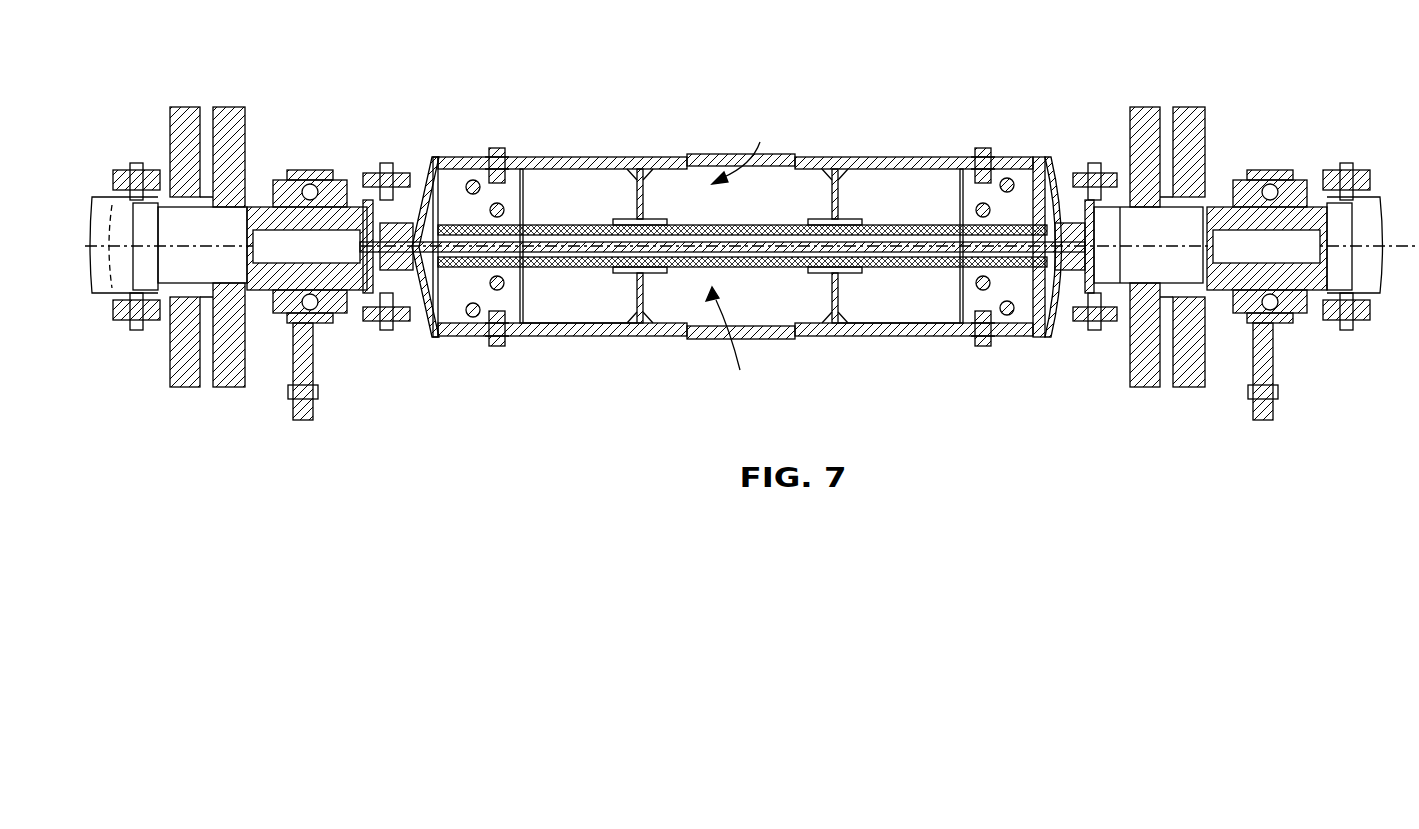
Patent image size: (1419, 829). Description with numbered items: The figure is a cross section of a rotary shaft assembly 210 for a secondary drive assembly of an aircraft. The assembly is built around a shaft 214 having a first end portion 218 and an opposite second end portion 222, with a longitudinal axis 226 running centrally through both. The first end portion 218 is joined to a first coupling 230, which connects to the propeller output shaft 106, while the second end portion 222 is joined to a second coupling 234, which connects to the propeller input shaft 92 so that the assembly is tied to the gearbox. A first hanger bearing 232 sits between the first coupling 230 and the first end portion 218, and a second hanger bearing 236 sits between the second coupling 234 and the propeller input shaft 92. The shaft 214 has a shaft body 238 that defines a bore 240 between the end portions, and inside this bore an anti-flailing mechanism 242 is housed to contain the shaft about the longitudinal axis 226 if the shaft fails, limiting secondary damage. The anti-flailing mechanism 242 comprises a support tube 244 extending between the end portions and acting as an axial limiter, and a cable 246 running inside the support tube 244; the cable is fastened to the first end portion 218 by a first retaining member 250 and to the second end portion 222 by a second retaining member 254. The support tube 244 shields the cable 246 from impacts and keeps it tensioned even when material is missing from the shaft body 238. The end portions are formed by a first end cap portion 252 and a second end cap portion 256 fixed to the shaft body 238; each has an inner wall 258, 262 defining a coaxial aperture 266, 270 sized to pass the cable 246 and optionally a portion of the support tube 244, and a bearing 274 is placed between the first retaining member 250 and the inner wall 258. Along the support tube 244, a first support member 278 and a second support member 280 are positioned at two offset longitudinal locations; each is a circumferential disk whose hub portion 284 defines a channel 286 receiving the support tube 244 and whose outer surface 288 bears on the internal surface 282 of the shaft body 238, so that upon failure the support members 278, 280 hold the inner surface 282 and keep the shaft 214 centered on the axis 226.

The propeller input shaft 92 is at (1368, 292).
The propeller output shaft 106 is at (122, 296).
The rotary shaft assembly 210 is at (752, 223).
The shaft 214 is at (570, 185).
The first end portion 218 is at (420, 190).
The second end portion 222 is at (1100, 168).
The longitudinal axis 226 is at (137, 160).
The first coupling 230 is at (235, 118).
The first hanger bearing 232 is at (328, 168).
The second coupling 234 is at (1190, 115).
The second hanger bearing 236 is at (1268, 172).
The shaft body 238 is at (688, 158).
The bore 240 is at (743, 147).
The anti-flailing mechanism 242 is at (730, 341).
The support tube 244 is at (966, 340).
The cable 246 is at (742, 235).
The first retaining member 250 is at (380, 325).
The first end cap portion 252 is at (498, 190).
The second retaining member 254 is at (1056, 335).
The second end cap portion 256 is at (1010, 205).
The inner wall 258 is at (417, 295).
The inner wall 262 is at (1040, 337).
The aperture 266 is at (438, 300).
The aperture 270 is at (1052, 195).
The bearing 274 is at (394, 333).
The first support member 278 is at (658, 337).
The second support member 280 is at (850, 335).
The internal surface 282 is at (928, 337).
The hub portion 284 is at (620, 274).
The channel 286 is at (852, 172).
The outer surface 288 is at (640, 335).